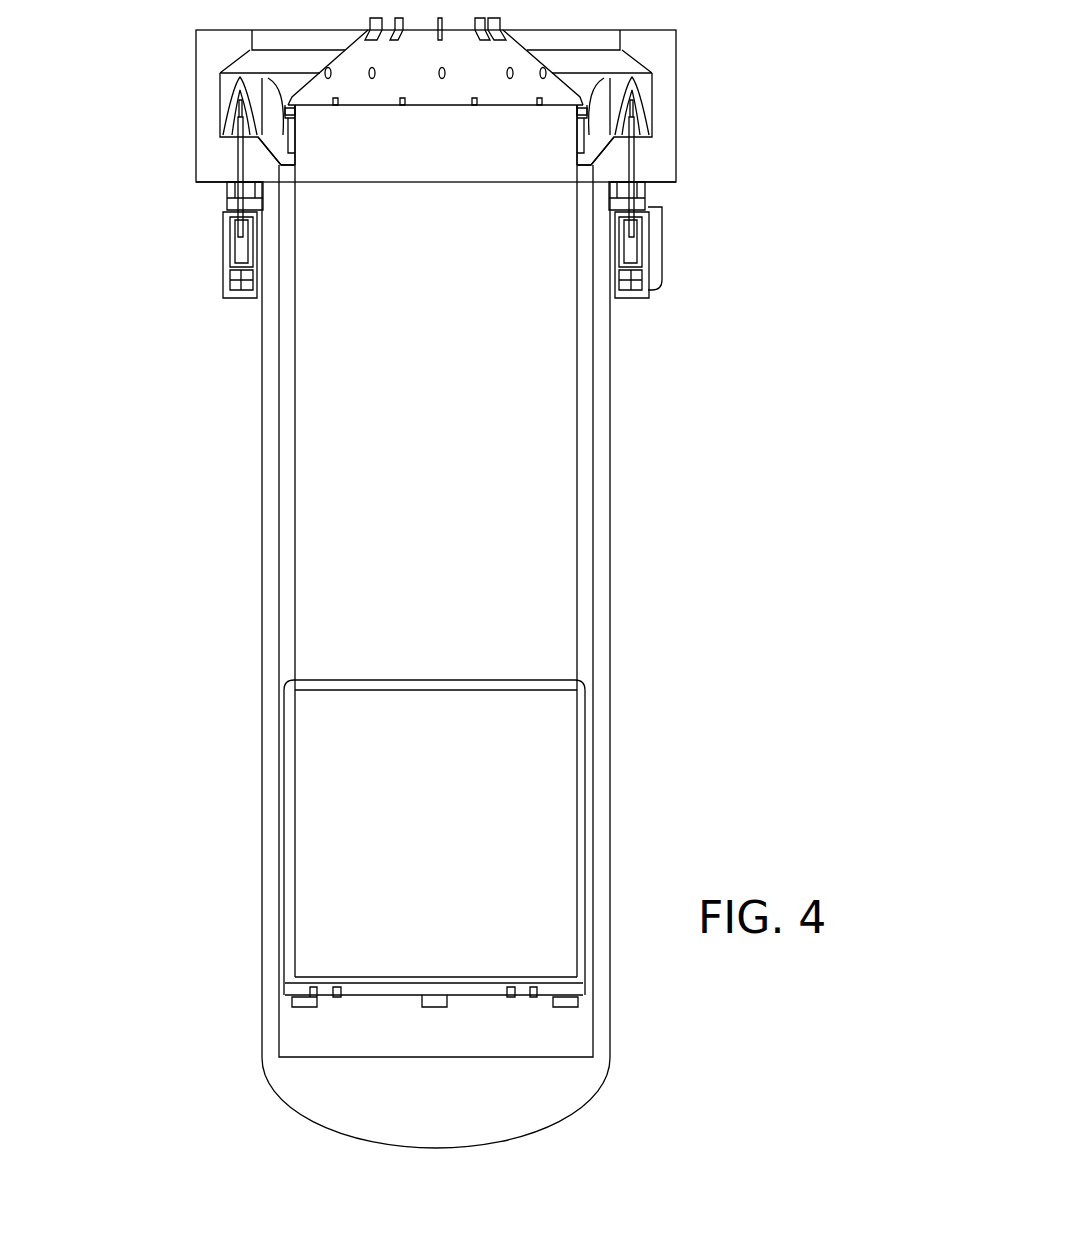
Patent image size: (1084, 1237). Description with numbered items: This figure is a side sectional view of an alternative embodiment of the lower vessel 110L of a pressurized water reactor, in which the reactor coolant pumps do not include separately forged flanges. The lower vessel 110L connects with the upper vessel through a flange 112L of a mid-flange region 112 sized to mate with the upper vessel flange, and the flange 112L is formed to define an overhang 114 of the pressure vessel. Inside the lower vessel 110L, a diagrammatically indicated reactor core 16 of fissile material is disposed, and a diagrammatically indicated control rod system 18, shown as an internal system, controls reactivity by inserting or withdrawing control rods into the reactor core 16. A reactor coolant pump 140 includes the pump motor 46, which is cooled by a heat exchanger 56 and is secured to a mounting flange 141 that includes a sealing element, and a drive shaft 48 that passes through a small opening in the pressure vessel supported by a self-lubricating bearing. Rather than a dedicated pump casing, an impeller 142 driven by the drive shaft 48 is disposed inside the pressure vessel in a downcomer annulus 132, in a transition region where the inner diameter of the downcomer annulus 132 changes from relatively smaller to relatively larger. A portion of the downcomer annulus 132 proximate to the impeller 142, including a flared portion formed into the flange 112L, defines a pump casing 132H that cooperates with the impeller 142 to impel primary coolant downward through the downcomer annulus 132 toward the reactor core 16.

The mid-flange region 112 is at (800, 322).
The flange 112L is at (674, 44).
The pump casing 132H is at (222, 135).
The mounting flange 141 is at (230, 198).
The impeller 142 is at (630, 90).
The drive shaft 48 is at (630, 153).
The reactor coolant pump 140 is at (663, 185).
The heat exchanger 56 is at (630, 248).
The overhang 114 is at (663, 235).
The pump motor 46 is at (720, 291).
The lower vessel 110L is at (609, 615).
The downcomer annulus 132 is at (583, 437).
The control rod system 18 is at (465, 428).
The reactor core 16 is at (465, 825).